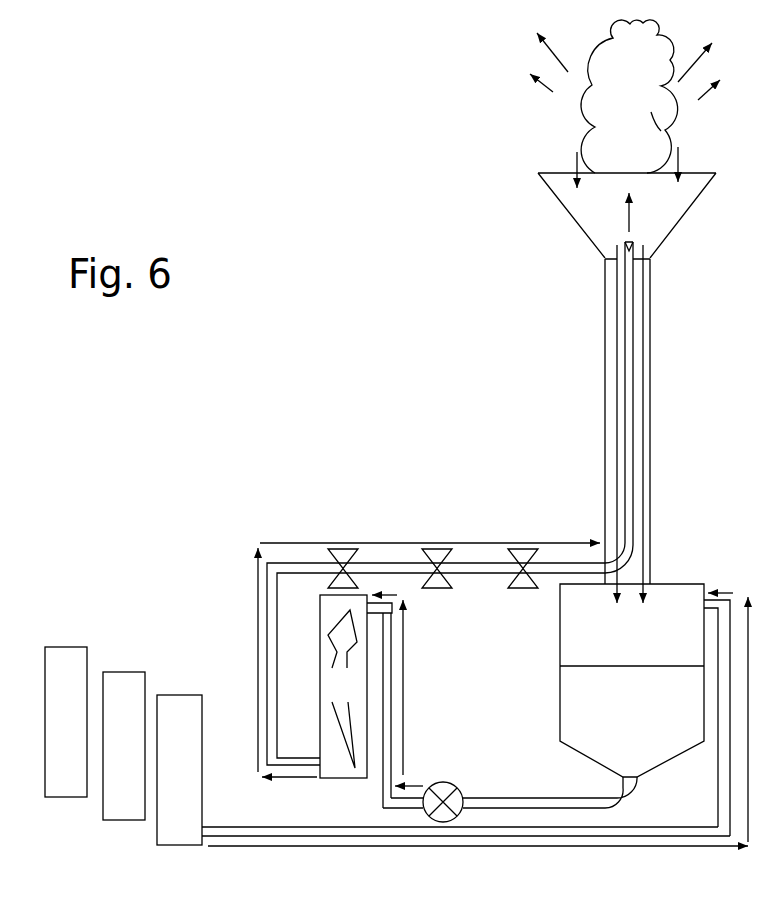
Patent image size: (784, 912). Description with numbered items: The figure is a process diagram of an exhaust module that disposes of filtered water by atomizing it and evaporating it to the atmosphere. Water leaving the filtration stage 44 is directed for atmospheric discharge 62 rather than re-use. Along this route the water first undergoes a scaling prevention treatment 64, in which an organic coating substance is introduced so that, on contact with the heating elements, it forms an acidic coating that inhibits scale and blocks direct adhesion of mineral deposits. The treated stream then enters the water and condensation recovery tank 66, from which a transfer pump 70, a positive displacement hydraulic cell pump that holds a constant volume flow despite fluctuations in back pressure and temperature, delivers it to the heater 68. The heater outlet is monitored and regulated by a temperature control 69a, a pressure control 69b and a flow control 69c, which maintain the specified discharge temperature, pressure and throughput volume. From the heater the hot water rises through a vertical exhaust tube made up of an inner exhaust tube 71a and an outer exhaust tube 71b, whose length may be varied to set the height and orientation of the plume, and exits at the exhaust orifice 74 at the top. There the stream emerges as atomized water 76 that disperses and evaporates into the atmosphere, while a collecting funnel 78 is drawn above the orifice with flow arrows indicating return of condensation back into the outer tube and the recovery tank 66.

The filtration stage 44 is at (87, 670).
The atmospheric discharge 62 is at (475, 740).
The scaling prevention treatment 64 is at (431, 680).
The water and condensation recovery tank 66 is at (645, 711).
The heater 68 is at (356, 697).
The temperature sensor and control 69a is at (344, 548).
The pressure sensor and control 69b is at (440, 548).
The flow sensor and control 69c is at (523, 548).
The transfer pump 70 is at (453, 781).
The inner exhaust tube 71a is at (628, 330).
The outer exhaust tube 71b is at (652, 530).
The exhaust orifice 74 is at (626, 241).
The atomized water 76 is at (582, 115).
The collector funnel 78 is at (679, 212).